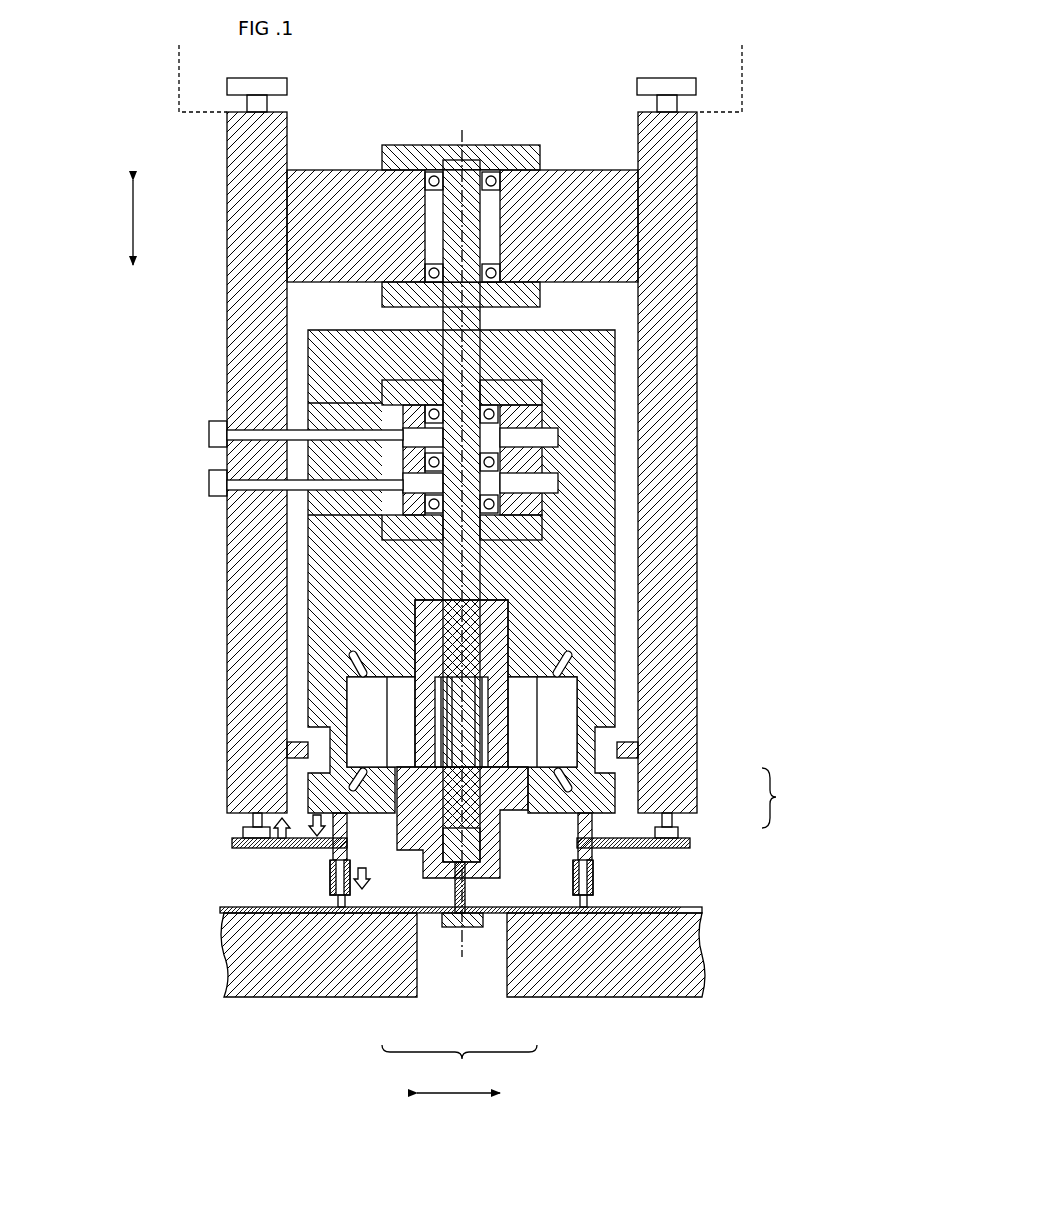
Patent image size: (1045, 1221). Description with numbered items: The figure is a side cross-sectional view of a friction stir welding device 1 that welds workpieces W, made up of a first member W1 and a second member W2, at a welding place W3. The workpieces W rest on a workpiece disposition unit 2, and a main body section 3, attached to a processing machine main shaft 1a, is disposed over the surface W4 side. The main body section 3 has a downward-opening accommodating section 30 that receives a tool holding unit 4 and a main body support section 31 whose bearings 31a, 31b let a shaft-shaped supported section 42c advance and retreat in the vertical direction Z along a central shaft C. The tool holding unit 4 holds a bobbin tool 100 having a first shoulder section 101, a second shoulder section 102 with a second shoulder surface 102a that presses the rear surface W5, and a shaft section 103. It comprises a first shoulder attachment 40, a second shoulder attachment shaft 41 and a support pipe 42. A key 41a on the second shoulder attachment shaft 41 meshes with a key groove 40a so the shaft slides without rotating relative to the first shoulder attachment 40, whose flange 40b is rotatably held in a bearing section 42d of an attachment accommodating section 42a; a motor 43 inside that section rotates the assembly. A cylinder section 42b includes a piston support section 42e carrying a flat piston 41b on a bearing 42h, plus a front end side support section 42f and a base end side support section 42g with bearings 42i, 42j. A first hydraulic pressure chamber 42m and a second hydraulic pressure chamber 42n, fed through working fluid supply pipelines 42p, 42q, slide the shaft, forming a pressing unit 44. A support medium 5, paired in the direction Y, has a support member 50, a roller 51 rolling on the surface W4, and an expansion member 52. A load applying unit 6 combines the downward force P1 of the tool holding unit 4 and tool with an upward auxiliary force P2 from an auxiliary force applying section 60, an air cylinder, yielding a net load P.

The friction stir welding device 1 is at (752, 134).
The processing machine main shaft 1a is at (742, 47).
The workpiece disposition unit 2 is at (700, 990).
The main body section 3 is at (697, 266).
The tool holding unit 4 is at (600, 790).
The support medium 5 is at (330, 873).
The load applying unit 6 is at (777, 798).
The accommodating section 30 is at (690, 665).
The main body support section 31 is at (683, 171).
The bearing 31a is at (500, 272).
The bearing 31b is at (500, 178).
The first shoulder attachment 40 is at (500, 625).
The key groove 40a is at (520, 720).
The flange 40b is at (385, 598).
The second shoulder attachment shaft 41 is at (455, 560).
The key 41a is at (470, 700).
The piston 41b is at (525, 432).
The support pipe 42 is at (312, 683).
The attachment accommodating section 42a is at (380, 705).
The cylinder section 42b is at (365, 428).
The supported section 42c is at (430, 225).
The bearing section 42d is at (560, 590).
The piston support section 42e is at (580, 455).
The front end side support section 42f is at (540, 525).
The base end side support section 42g is at (530, 388).
The bearing 42h is at (530, 485).
The bearing 42i is at (410, 550).
The bearing 42j is at (418, 382).
The first hydraulic pressure chamber 42m is at (395, 488).
The second hydraulic pressure chamber 42n is at (318, 418).
The working fluid supply pipeline 42p is at (250, 485).
The working fluid supply pipeline 42q is at (250, 435).
The motor 43 is at (370, 718).
The pressing unit 44 is at (617, 410).
The support member 50 is at (347, 830).
The roller 51 is at (338, 900).
The expansion member 52 is at (235, 843).
The auxiliary force applying section 60 is at (243, 833).
The bobbin tool 100 is at (517, 907).
The first shoulder section 101 is at (500, 855).
The second shoulder section 102 is at (462, 930).
The second shoulder surface 102a is at (445, 927).
The shaft section 103 is at (455, 885).
The central shaft C is at (462, 130).
The load P is at (362, 889).
The force P1 is at (282, 818).
The auxiliary force P2 is at (317, 822).
The workpieces W is at (459, 1064).
The first member W1 is at (410, 925).
The second member W2 is at (512, 925).
The welding place W3 is at (507, 917).
The surface W4 is at (702, 910).
The rear surface W5 is at (705, 925).
The direction perpendicular to the scanning direction Y is at (458, 1106).
The vertical direction Z is at (121, 222).